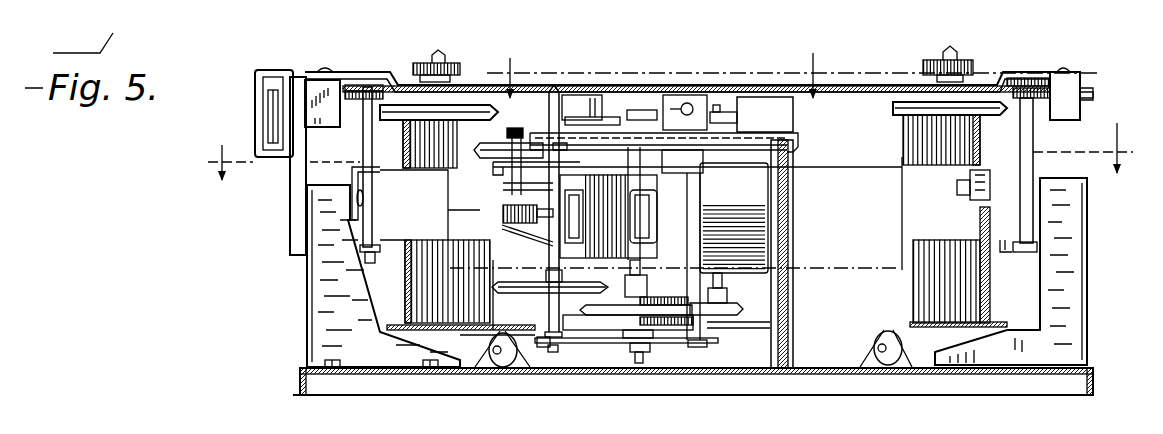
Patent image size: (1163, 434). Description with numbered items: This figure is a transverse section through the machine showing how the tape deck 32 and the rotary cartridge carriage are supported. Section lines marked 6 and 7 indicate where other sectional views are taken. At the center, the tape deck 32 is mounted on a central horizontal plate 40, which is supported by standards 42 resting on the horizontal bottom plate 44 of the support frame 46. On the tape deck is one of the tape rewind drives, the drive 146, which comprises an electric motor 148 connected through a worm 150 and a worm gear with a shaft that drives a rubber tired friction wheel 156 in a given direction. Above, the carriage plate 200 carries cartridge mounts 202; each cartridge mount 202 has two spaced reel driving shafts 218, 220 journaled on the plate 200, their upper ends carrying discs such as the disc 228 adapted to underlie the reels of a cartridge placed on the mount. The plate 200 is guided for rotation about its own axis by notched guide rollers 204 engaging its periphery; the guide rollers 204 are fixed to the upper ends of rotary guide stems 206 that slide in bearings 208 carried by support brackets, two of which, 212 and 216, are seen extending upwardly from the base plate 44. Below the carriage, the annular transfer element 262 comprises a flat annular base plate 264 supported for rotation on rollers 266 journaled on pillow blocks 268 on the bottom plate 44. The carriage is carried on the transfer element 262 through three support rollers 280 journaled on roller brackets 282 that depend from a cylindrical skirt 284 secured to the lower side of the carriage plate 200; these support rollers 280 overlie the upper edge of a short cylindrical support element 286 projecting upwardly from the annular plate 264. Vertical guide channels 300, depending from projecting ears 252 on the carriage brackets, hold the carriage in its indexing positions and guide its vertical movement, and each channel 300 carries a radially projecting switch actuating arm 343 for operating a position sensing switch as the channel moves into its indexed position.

The section line 6- 6 is at (668, 151).
The section line 7- 7 is at (660, 69).
The tape deck 32 is at (723, 100).
The central horizontal plate 40 is at (757, 136).
The standards 42 is at (793, 287).
The horizontal bottom plate 44 is at (720, 375).
The support frame 46 is at (298, 342).
The rewind drive 146 is at (497, 203).
The electric motor 148 is at (520, 185).
The worm 150 is at (495, 210).
The rubber tired friction wheel 156 is at (480, 145).
The carriage plate 200 is at (897, 82).
The cartridge mount 202 is at (357, 70).
The notched guide rollers 204 is at (1082, 57).
The rotary guide stems 206 is at (373, 200).
The bearings 208 is at (380, 170).
The support bracket 212 is at (1083, 278).
The support bracket 216 is at (308, 313).
The reel driving shaft 218 is at (957, 60).
The reel driving shaft 220 is at (447, 57).
The disc 228 is at (403, 77).
The projecting ears 252 is at (327, 429).
The annular transfer element 262 is at (467, 337).
The annular base plate 264 is at (917, 320).
The rollers 266 is at (877, 330).
The pillow blocks 268 is at (903, 367).
The support rollers 280 is at (963, 173).
The roller brackets 282 is at (967, 168).
The cylindrical skirt 284 is at (900, 135).
The cylindrical support element 286 is at (950, 240).
The vertical guide channel 300 is at (1075, 110).
The switch actuating arm 343 is at (1093, 92).